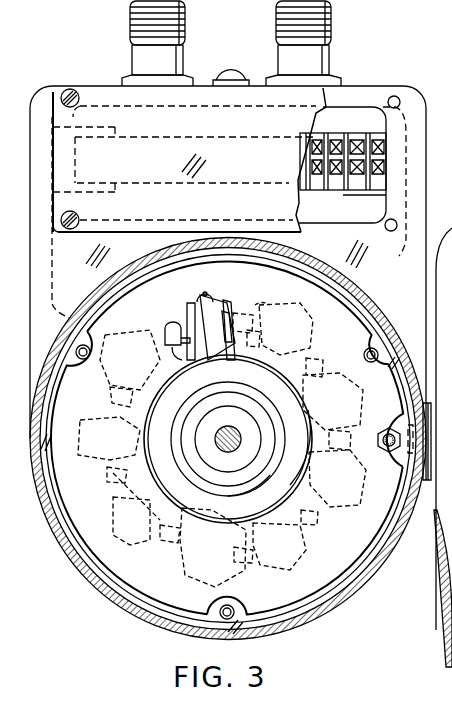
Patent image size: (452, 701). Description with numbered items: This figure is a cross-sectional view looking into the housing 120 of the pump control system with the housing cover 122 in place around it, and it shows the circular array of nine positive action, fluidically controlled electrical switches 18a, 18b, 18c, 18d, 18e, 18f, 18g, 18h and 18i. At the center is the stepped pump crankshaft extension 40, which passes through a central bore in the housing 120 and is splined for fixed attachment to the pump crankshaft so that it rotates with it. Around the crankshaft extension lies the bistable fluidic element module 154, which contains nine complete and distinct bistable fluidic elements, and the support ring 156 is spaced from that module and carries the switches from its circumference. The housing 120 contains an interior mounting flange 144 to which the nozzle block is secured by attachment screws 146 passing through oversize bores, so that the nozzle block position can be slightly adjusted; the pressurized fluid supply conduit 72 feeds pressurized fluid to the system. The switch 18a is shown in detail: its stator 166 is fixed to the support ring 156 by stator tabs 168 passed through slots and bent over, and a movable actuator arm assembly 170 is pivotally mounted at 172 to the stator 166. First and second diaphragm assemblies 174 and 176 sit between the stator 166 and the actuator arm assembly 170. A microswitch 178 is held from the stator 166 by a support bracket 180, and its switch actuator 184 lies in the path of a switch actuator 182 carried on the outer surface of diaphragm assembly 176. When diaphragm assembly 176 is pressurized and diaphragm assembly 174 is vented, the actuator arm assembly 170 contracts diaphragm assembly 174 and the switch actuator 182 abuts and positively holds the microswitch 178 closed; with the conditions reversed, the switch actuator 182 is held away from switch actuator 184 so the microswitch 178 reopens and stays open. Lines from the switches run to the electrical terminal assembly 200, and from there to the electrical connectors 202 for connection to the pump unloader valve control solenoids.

The electrical connectors 202 is at (276, 33).
The electrical terminal assembly 200 is at (369, 143).
The housing 120 is at (78, 557).
The housing cover 122 is at (108, 602).
The interior mounting flange 144 is at (77, 370).
The attachment screws 146 is at (85, 360).
The pressurized fluid supply conduit 72 is at (383, 455).
The diaphragm assembly 176 is at (208, 358).
The stator tabs 168 is at (243, 400).
The pump crankshaft extension 40 is at (213, 443).
The support ring 156 is at (304, 403).
The bistable fluidic element module 154 is at (268, 478).
The stator 166 is at (228, 303).
The pivot mounting 172 is at (214, 296).
The switch actuator 182 is at (191, 320).
The switch actuator 184 is at (185, 328).
The microswitch 178 is at (163, 337).
The diaphragm assembly 174 is at (235, 332).
The support bracket 180 is at (182, 360).
The actuator arm assembly 170 is at (260, 310).
The fluidically controlled electrical switch 18a is at (202, 288).
The fluidically controlled electrical switch 18b is at (116, 344).
The fluidically controlled electrical switch 18c is at (97, 437).
The fluidically controlled electrical switch 18d is at (123, 523).
The fluidically controlled electrical switch 18e is at (205, 570).
The fluidically controlled electrical switch 18f is at (286, 553).
The fluidically controlled electrical switch 18g is at (334, 487).
The fluidically controlled electrical switch 18h is at (346, 397).
The fluidically controlled electrical switch 18i is at (306, 313).